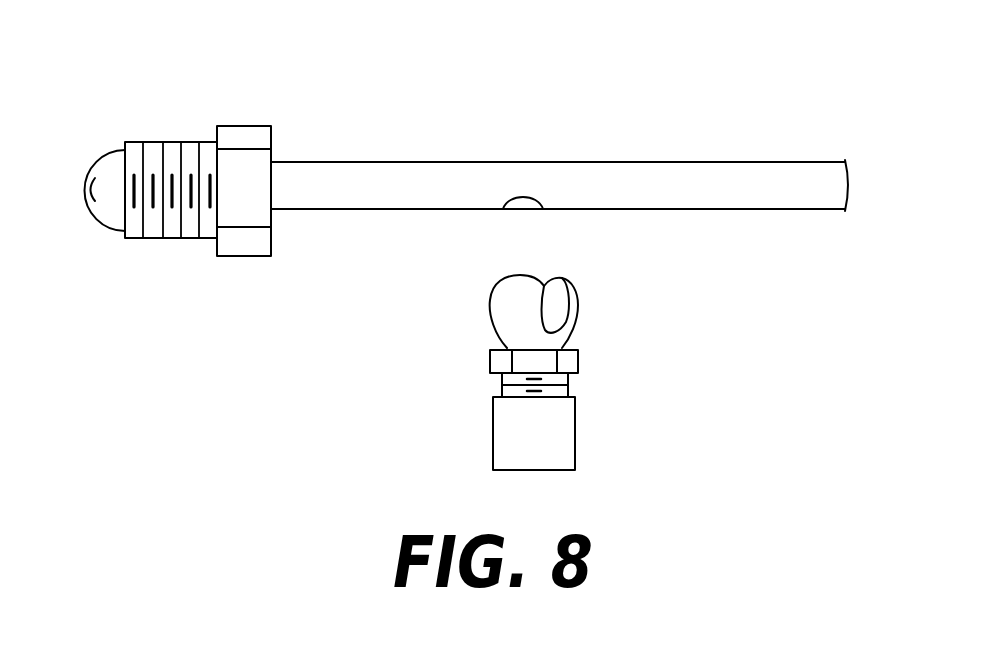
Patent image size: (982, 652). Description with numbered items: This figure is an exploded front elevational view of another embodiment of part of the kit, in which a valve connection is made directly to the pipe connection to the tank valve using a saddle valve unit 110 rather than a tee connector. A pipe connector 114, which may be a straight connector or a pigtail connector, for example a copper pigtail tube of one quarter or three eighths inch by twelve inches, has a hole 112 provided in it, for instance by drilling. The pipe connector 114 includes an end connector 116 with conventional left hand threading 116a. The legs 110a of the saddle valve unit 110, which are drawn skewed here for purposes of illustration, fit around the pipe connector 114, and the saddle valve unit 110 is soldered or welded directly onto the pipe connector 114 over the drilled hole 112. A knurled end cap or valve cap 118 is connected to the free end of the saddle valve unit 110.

The saddle valve unit 110 is at (541, 365).
The legs 110a is at (493, 295).
The hole 112 is at (528, 210).
The pipe connector 114 is at (498, 162).
The end connector 116 is at (178, 169).
The left hand threading 116a is at (170, 238).
The valve cap 118 is at (570, 458).